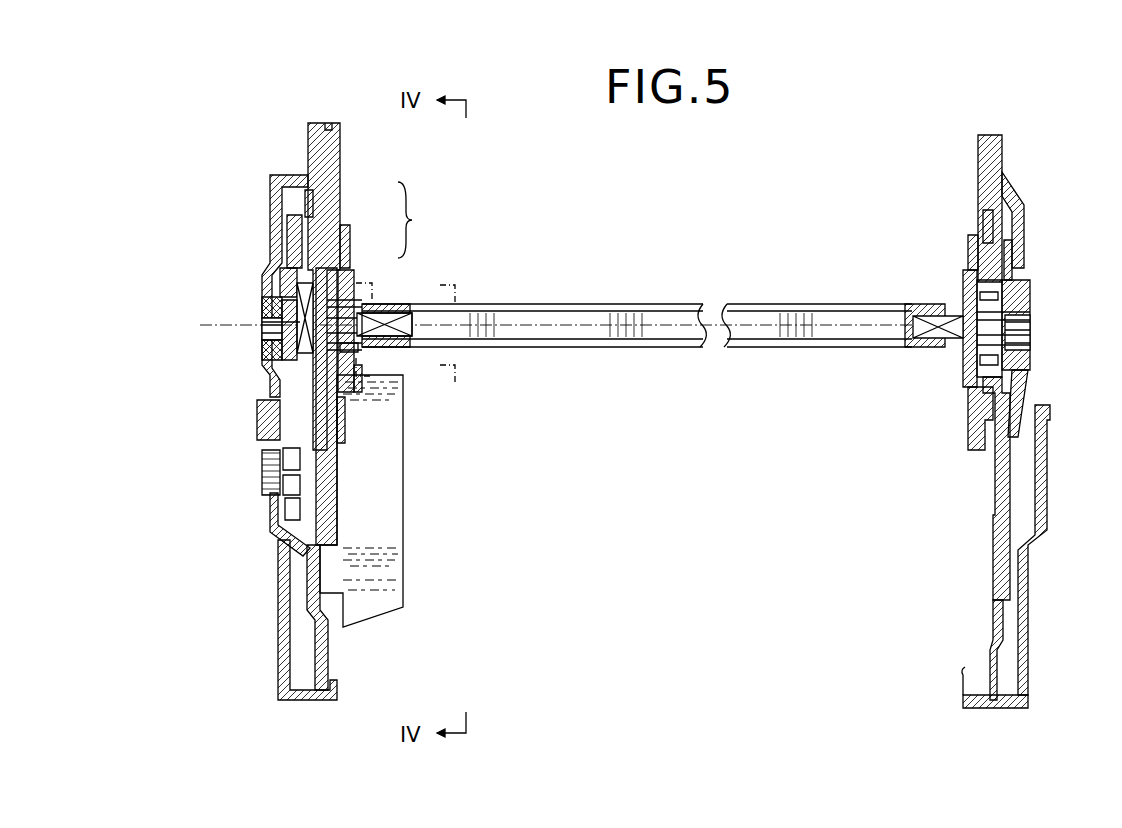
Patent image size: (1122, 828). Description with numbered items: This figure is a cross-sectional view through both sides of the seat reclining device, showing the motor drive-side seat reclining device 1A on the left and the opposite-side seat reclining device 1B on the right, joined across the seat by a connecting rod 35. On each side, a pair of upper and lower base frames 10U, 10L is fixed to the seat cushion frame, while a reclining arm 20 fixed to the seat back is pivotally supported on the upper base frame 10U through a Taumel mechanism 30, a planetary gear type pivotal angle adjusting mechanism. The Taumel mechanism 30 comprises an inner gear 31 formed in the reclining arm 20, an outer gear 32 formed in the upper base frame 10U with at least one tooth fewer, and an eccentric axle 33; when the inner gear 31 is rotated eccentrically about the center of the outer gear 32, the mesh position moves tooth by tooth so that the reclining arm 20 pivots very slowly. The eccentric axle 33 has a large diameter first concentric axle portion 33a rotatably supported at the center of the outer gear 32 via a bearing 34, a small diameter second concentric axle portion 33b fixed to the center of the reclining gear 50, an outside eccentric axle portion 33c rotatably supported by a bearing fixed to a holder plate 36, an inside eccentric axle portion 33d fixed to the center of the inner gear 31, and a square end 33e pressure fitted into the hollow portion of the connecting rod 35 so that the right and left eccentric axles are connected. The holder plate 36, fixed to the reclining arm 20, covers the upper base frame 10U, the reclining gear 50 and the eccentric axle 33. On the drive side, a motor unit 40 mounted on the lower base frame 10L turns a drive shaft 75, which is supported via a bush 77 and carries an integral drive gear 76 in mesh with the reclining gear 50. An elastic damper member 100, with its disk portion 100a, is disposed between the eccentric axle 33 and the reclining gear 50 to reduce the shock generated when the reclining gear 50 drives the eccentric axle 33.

The seat reclining device 1A is at (262, 168).
The seat reclining device 1B is at (900, 170).
The reclining arm 20 is at (338, 178).
The Taumel mechanism 30 is at (483, 220).
The inner gear 31 is at (332, 225).
The outer gear 32 is at (345, 238).
The eccentric axle 33 is at (353, 283).
The first concentric axle portion 33a is at (360, 372).
The second concentric axle portion 33b is at (262, 322).
The outside tapered eccentric axle portion 33c is at (262, 335).
The inside tapered eccentric axle portion 33d is at (360, 343).
The square end 33e is at (378, 318).
The bearing 34 is at (297, 270).
The connecting rod 35 is at (262, 352).
The holder plate 36 is at (270, 246).
The motor unit 40 is at (405, 555).
The reclining gear 50 is at (290, 223).
The drive shaft 75 is at (262, 466).
The drive gear 76 is at (280, 518).
The bush 77 is at (280, 490).
The damper member 100 is at (262, 368).
The disk portion 100a is at (280, 304).
The upper base frame 10U is at (335, 398).
The lower base frame 10L is at (280, 660).